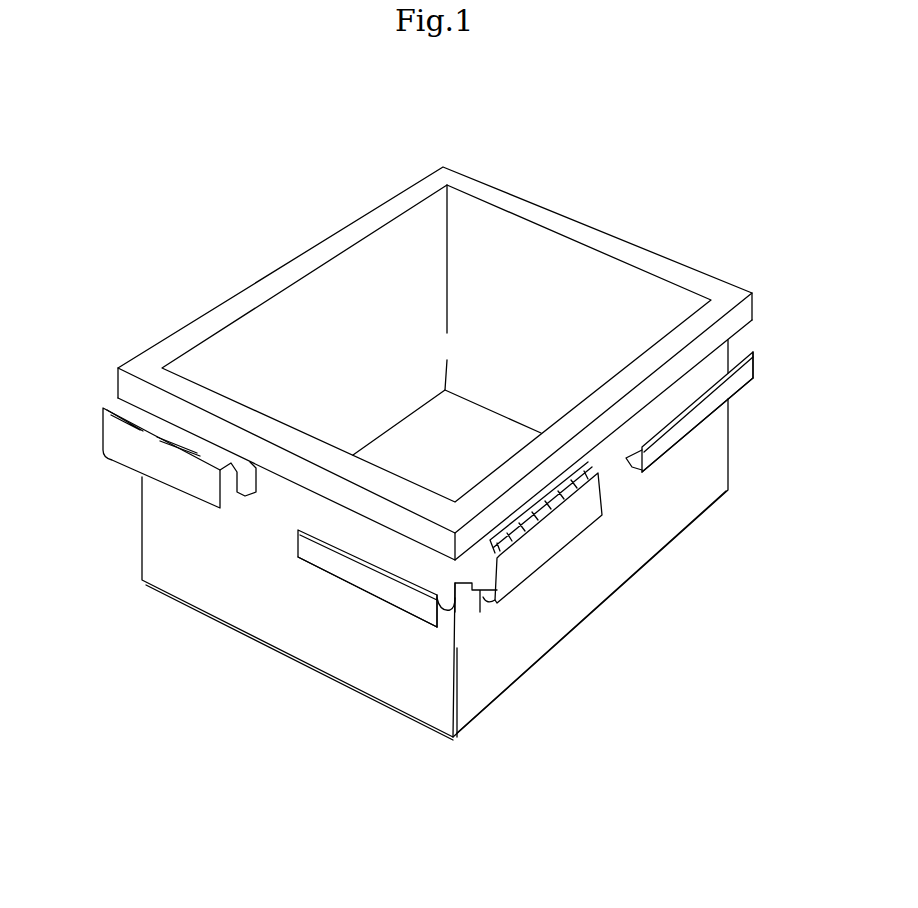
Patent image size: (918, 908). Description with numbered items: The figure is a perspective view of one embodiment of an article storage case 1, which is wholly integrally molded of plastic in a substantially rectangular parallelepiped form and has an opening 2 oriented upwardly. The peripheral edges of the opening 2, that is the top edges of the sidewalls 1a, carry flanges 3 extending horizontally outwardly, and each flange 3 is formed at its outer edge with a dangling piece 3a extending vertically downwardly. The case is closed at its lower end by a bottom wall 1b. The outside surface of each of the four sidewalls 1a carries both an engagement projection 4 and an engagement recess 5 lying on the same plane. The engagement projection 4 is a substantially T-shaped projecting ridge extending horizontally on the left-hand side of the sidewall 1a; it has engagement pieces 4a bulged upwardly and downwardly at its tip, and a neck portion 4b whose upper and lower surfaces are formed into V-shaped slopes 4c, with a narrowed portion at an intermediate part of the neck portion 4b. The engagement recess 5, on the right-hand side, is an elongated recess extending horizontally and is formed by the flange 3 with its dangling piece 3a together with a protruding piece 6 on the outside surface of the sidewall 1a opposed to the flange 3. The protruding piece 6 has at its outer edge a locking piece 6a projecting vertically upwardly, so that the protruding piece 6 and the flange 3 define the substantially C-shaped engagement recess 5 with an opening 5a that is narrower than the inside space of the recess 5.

The article storage case 1 is at (245, 278).
The sidewall 1a is at (600, 222).
The bottom wall 1b is at (447, 423).
The opening 2 is at (412, 260).
The flange 3 is at (513, 200).
The dangling piece 3a is at (568, 213).
The engagement projection 4 is at (150, 460).
The engagement piece 4a is at (114, 458).
The neck portion 4b is at (233, 487).
The V-shaped slope 4c is at (197, 445).
The engagement recess 5 is at (700, 387).
The opening 5a is at (675, 397).
The protruding piece 6 is at (650, 463).
The locking piece 6a is at (745, 352).